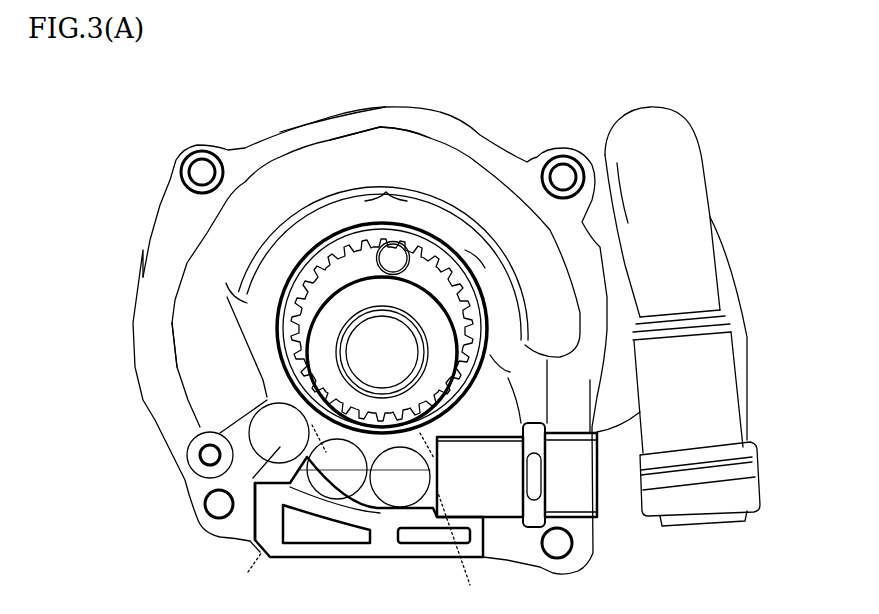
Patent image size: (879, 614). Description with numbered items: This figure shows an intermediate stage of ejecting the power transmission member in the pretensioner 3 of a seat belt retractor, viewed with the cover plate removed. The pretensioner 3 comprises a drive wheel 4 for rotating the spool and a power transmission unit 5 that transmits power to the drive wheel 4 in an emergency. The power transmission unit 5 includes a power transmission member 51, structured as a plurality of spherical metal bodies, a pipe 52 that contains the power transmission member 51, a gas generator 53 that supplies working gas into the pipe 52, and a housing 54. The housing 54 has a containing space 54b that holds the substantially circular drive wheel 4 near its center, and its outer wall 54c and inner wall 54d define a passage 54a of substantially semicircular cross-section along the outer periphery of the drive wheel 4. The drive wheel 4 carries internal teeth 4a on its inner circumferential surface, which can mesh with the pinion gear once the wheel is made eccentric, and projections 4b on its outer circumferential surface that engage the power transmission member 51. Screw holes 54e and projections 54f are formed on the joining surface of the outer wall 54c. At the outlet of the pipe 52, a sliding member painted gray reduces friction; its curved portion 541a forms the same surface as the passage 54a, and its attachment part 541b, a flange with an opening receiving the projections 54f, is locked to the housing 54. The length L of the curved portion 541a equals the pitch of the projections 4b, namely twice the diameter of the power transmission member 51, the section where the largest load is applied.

The pretensioner 3 is at (118, 150).
The drive wheel 4 is at (263, 314).
The internal teeth 4a is at (333, 262).
The projections 4b is at (312, 440).
The power transmission unit 5 is at (757, 244).
The power transmission member 51 is at (339, 455).
The pipe 52 is at (700, 128).
The gas generator 53 is at (710, 520).
The housing 54 is at (140, 246).
The passage 54a is at (190, 327).
The containing space 54b is at (433, 218).
The outer wall 54c is at (362, 107).
The inner wall 54d is at (387, 193).
The screw holes 54e is at (214, 153).
The projections 54f is at (318, 550).
The curved portion 541a is at (375, 512).
The attachment part 541b is at (262, 556).
The length L is at (312, 467).